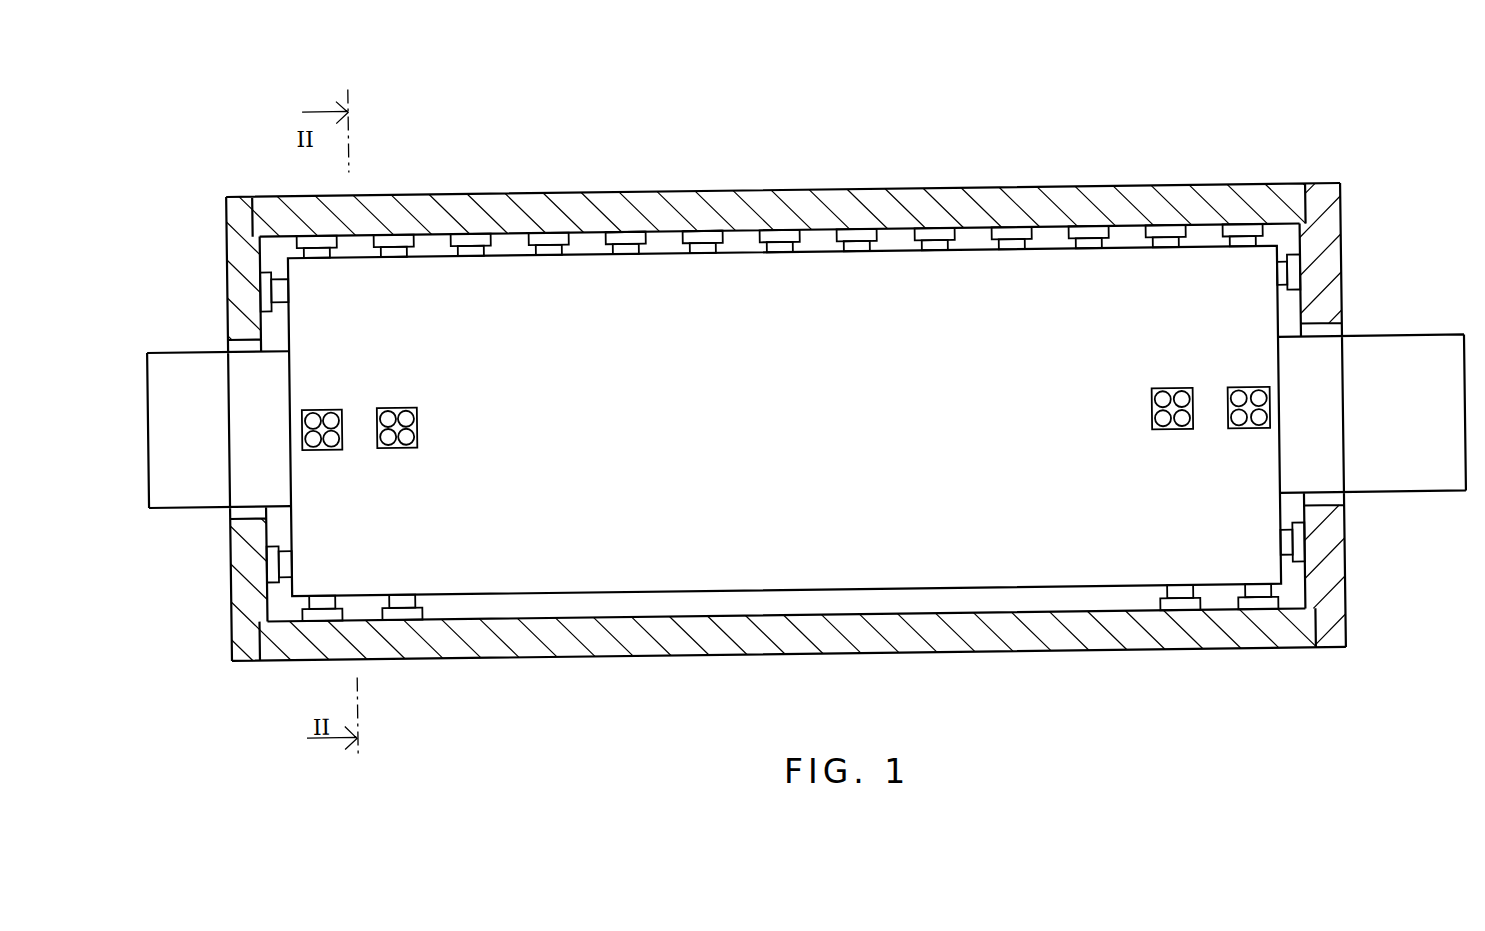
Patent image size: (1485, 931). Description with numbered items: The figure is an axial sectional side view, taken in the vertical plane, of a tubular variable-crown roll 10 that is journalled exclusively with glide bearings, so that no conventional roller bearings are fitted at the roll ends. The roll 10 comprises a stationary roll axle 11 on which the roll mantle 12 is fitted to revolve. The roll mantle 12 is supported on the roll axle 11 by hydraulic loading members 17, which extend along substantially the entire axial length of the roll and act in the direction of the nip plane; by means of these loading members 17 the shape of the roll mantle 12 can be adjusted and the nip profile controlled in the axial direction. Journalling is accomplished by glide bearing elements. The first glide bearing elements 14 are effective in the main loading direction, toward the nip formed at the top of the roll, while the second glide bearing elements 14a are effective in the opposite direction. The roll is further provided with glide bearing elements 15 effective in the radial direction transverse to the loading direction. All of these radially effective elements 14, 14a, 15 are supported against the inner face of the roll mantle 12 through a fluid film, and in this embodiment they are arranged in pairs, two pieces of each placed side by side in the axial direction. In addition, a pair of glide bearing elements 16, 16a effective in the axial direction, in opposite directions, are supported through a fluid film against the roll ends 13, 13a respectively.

The roll 10 is at (1029, 138).
The stationary roll axle 11 is at (892, 283).
The roll mantle 12 is at (786, 200).
The roll end 13 is at (242, 238).
The roll end 13a is at (1331, 220).
The first glide bearing elements 14 is at (1242, 238).
The second glide bearing elements 14a is at (391, 607).
The glide bearing elements 15 is at (385, 407).
The glide bearing element 16 is at (267, 290).
The glide bearing element 16a is at (1297, 286).
The hydraulic loading members 17 is at (694, 234).